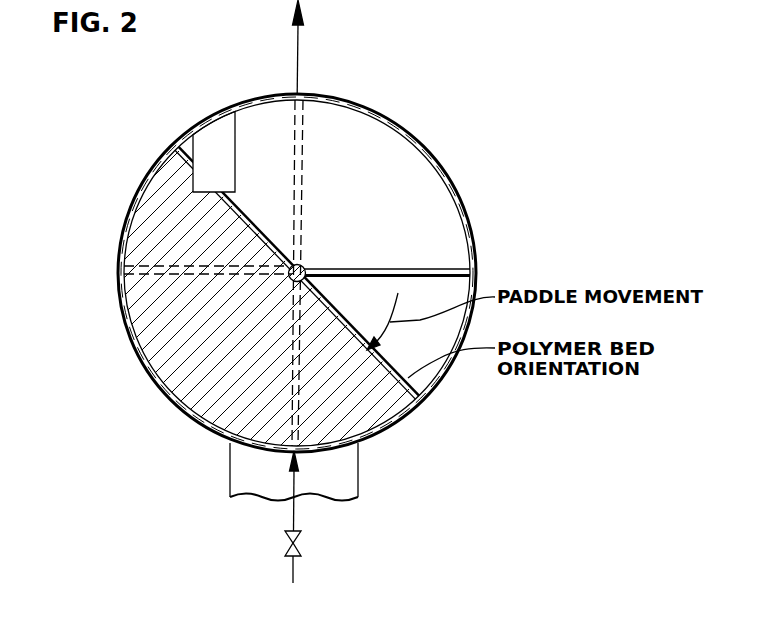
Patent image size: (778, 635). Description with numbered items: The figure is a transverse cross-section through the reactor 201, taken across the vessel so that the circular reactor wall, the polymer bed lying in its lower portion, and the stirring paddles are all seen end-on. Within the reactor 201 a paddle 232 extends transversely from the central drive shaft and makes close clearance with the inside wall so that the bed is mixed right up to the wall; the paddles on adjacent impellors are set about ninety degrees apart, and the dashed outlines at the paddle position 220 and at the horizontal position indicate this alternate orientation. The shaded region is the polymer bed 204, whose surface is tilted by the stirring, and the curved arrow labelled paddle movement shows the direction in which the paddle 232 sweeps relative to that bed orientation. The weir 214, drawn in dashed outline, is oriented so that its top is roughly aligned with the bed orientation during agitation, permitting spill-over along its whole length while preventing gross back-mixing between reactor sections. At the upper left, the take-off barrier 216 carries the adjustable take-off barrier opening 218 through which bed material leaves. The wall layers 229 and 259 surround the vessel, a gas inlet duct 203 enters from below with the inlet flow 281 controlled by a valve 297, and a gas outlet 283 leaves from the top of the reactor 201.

The reactor 201 is at (422, 407).
The gas inlet duct 203 is at (358, 480).
The polymer bed 204 is at (288, 283).
The weir 214 is at (247, 212).
The take-off barrier 216 is at (413, 177).
The adjustable take-off barrier opening 218 is at (217, 137).
The paddle in vertical position (dashed) 220 is at (304, 156).
The vessel jacket 229 is at (446, 115).
The paddle 232 is at (449, 268).
The vessel wall liner 259 is at (427, 154).
The gas inlet flow 281 is at (292, 478).
The gas outlet 283 is at (299, 35).
The valve 297 is at (286, 542).